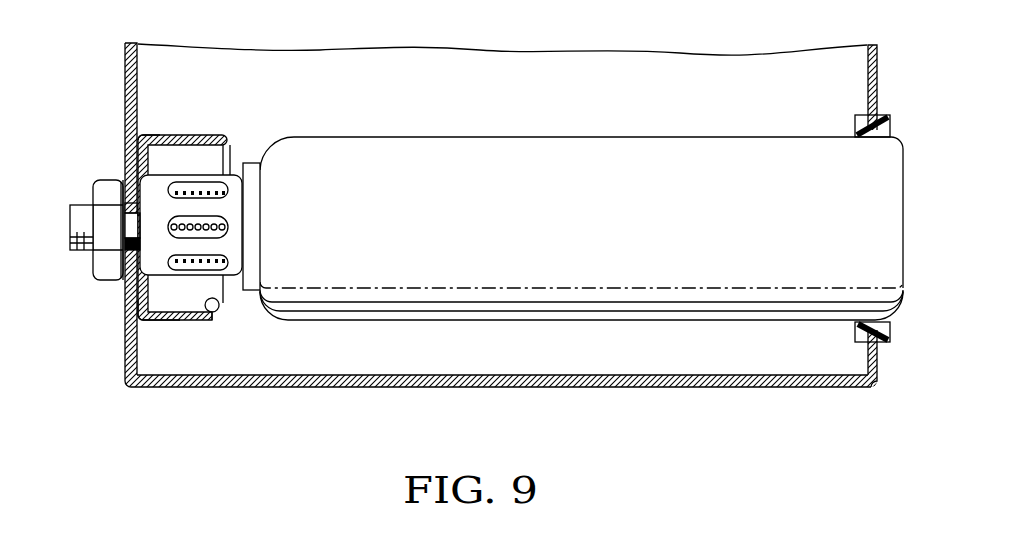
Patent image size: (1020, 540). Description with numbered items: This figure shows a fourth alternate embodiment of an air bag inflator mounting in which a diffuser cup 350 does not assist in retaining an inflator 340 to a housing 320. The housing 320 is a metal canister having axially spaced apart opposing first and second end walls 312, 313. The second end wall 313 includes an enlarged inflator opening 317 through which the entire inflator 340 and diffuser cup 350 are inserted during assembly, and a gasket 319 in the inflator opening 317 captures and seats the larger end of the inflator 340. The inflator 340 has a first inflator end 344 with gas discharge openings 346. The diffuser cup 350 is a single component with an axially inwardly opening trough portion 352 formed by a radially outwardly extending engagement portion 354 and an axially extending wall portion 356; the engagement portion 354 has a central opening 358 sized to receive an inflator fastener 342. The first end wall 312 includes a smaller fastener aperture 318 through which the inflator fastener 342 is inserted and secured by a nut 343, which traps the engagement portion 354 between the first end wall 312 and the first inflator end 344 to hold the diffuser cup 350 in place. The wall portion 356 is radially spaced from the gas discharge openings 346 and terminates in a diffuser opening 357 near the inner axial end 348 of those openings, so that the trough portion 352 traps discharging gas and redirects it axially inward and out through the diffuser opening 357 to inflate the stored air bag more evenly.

The first end wall 312 is at (123, 358).
The second end wall 313 is at (878, 360).
The inflator opening 317 is at (884, 126).
The fastener aperture 318 is at (121, 207).
The gasket 319 is at (853, 331).
The housing 320 is at (628, 394).
The inflator 340 is at (581, 132).
The inflator fastener 342 is at (80, 207).
The nut 343 is at (110, 245).
The first inflator end 344 is at (243, 165).
The gas discharge openings 346 is at (185, 180).
The inner axial end 348 is at (229, 228).
The diffuser cup 350 is at (216, 128).
The trough portion 352 is at (231, 311).
The engagement portion 354 is at (147, 164).
The wall portion 356 is at (163, 319).
The diffuser opening 357 is at (231, 175).
The central opening 358 is at (123, 244).